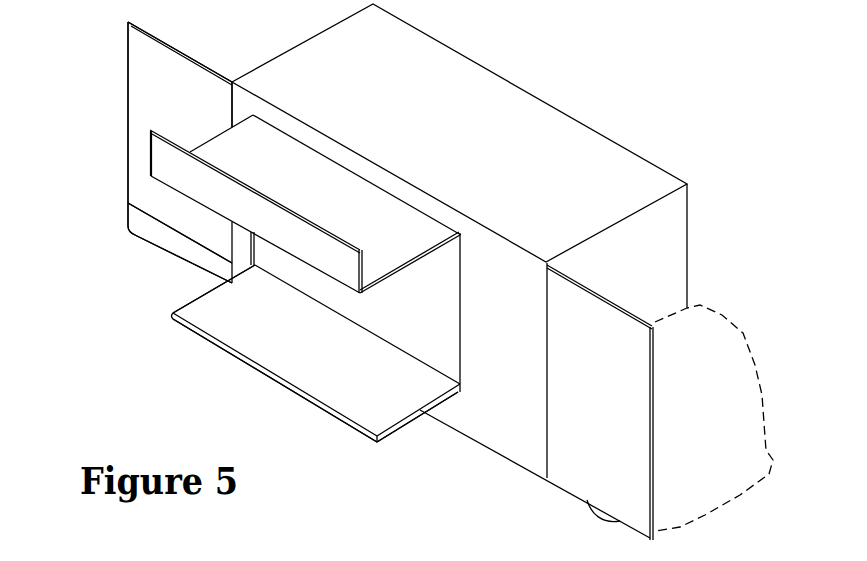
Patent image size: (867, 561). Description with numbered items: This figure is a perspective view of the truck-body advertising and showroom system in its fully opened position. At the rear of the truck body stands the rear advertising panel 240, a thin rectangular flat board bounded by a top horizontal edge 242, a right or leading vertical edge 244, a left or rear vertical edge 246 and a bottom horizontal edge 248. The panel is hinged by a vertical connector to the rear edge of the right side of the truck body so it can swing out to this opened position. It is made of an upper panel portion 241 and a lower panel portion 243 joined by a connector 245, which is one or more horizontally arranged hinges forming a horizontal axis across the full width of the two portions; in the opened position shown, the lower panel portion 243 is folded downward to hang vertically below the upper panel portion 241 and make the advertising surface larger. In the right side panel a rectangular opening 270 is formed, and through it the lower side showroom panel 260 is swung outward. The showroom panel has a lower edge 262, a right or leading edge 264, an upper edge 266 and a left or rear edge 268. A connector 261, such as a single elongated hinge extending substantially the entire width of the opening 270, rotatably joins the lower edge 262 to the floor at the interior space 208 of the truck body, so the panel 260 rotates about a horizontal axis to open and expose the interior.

The rear advertising panel 240 is at (216, 50).
The upper panel portion 241 is at (147, 85).
The top horizontal edge 242 is at (160, 42).
The lower panel portion 243 is at (137, 223).
The leading vertical edge 244 is at (232, 110).
The connector 245 is at (136, 206).
The rear vertical edge 246 is at (128, 98).
The bottom horizontal edge 248 is at (142, 237).
The lower side showroom panel 260 is at (304, 369).
The interior space 208 is at (319, 287).
The connector 261 is at (428, 358).
The lower edge 262 is at (392, 337).
The leading edge 264 is at (410, 418).
The upper edge 266 is at (293, 392).
The rear edge 268 is at (190, 300).
The opening 270 is at (441, 272).